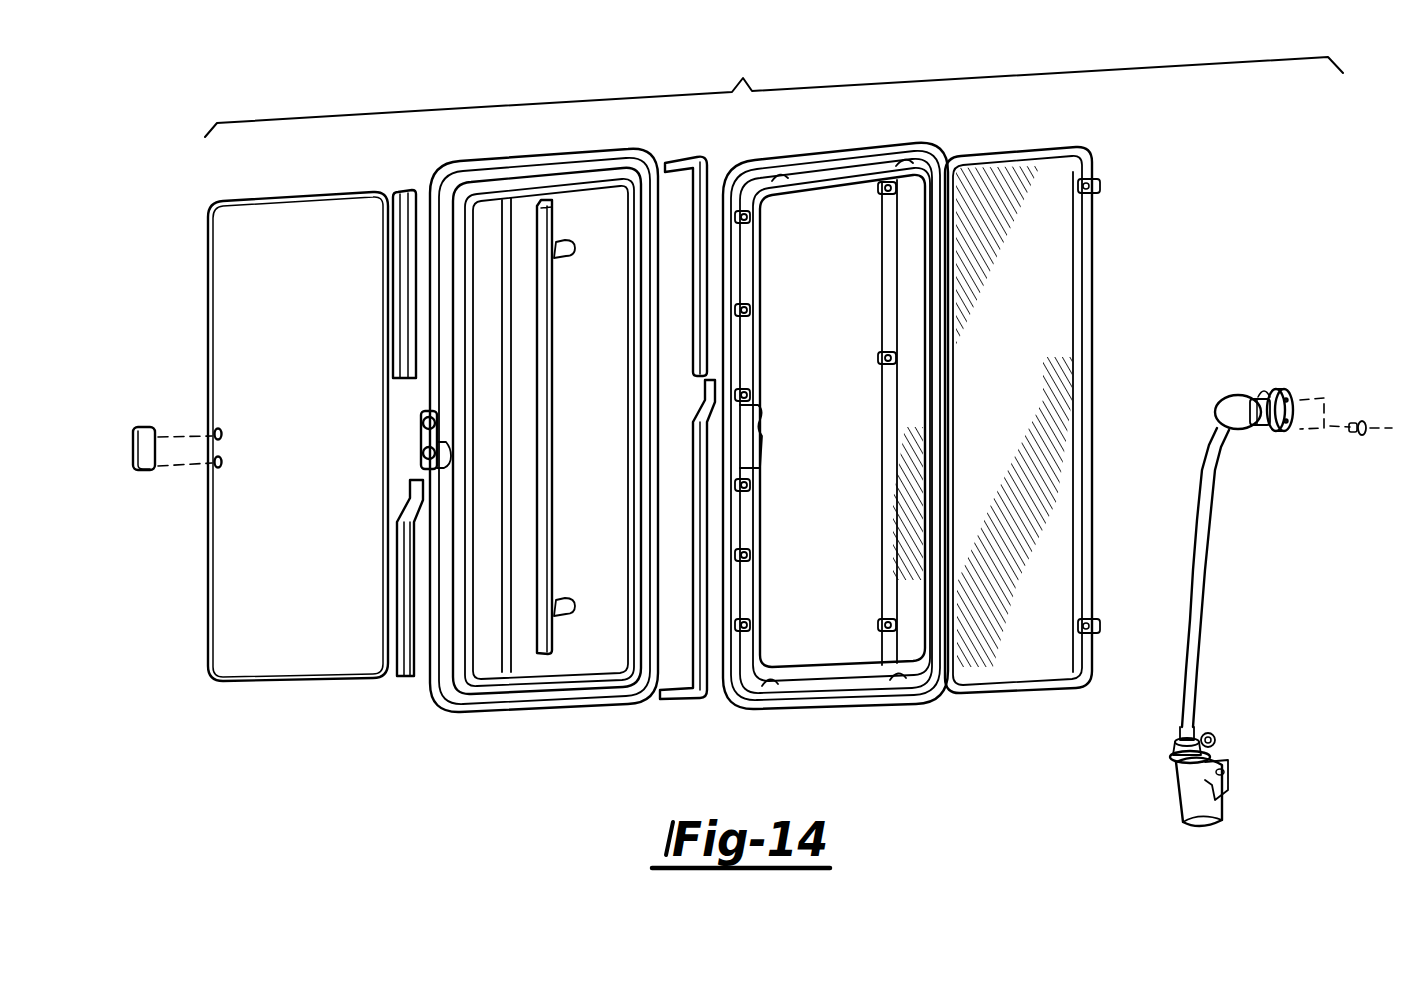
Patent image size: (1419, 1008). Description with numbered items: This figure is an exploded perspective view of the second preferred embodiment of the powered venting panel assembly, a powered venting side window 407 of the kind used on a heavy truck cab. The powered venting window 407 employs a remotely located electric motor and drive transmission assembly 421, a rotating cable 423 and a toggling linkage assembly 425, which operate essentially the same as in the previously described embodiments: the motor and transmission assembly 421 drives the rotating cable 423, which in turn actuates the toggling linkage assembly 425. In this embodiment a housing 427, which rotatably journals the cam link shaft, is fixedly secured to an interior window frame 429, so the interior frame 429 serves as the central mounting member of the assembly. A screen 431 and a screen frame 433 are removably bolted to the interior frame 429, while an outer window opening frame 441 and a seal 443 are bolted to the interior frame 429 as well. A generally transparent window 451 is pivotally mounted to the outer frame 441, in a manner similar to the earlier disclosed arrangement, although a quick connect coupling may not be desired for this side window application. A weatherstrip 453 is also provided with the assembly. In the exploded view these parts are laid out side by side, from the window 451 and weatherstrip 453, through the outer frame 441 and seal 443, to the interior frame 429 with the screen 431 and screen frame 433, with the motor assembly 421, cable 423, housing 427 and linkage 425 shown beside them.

The powered venting side window panel 407 is at (774, 86).
The electric motor and drive transmission assembly 421 is at (1202, 808).
The rotating cable 423 is at (1211, 527).
The toggling linkage assembly 425 is at (1297, 384).
The housing 427 is at (1230, 397).
The interior window frame 429 is at (772, 157).
The screen 431 is at (1050, 178).
The screen frame 433 is at (968, 162).
The outer window opening frame 441 is at (538, 697).
The seal 443 is at (686, 160).
The window 451 is at (310, 657).
The weatherstrip 453 is at (413, 677).